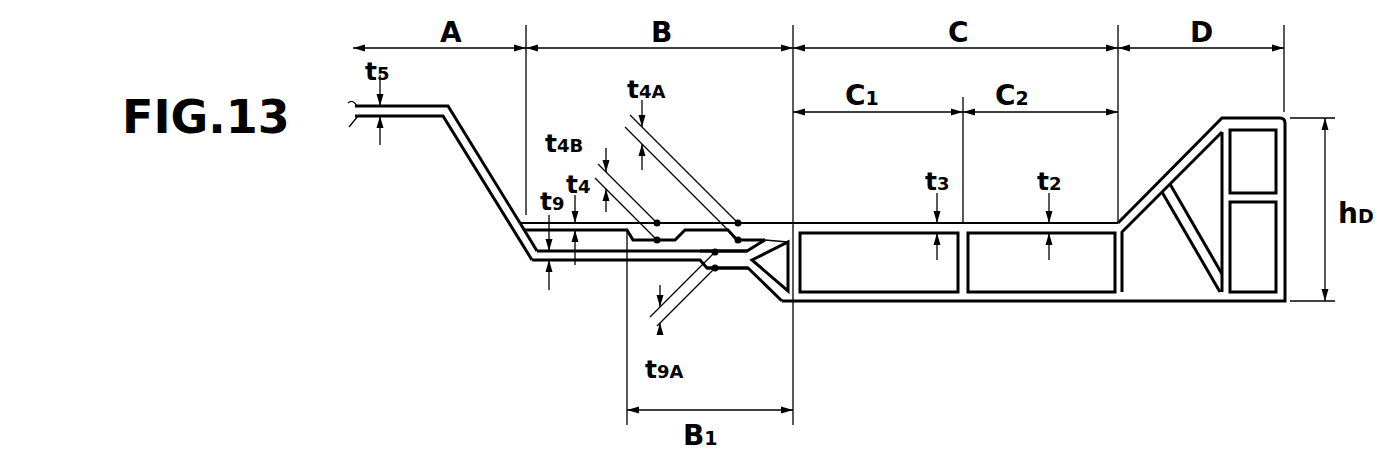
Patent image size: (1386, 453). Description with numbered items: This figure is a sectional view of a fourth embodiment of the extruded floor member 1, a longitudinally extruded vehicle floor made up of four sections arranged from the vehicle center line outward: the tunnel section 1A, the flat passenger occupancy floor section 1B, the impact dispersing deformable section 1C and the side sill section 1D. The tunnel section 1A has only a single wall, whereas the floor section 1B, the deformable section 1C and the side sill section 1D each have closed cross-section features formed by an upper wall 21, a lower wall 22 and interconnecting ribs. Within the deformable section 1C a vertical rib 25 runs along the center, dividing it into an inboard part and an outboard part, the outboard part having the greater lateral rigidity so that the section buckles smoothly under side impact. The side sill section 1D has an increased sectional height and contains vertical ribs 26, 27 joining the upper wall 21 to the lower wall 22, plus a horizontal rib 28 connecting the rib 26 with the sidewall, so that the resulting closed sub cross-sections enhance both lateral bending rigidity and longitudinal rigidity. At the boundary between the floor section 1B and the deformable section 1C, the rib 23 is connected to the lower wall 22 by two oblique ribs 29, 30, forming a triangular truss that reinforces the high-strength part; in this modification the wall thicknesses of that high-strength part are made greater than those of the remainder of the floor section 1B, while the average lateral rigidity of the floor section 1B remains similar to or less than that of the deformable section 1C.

The extruded floor member 1 is at (1298, 108).
The tunnel section 1A is at (423, 117).
The flat passenger occupancy floor section 1B is at (657, 252).
The impact dispersing deformable section 1C is at (950, 263).
The side sill section 1D is at (1201, 253).
The upper wall 21 is at (860, 222).
The lower wall 22 is at (862, 302).
The rib 23 is at (772, 268).
The vertical rib 25 is at (968, 268).
The vertical rib 26 is at (1212, 160).
The vertical rib 27 is at (1180, 190).
The horizontal rib 28 is at (1263, 193).
The oblique rib 29 is at (746, 252).
The oblique rib 30 is at (753, 264).